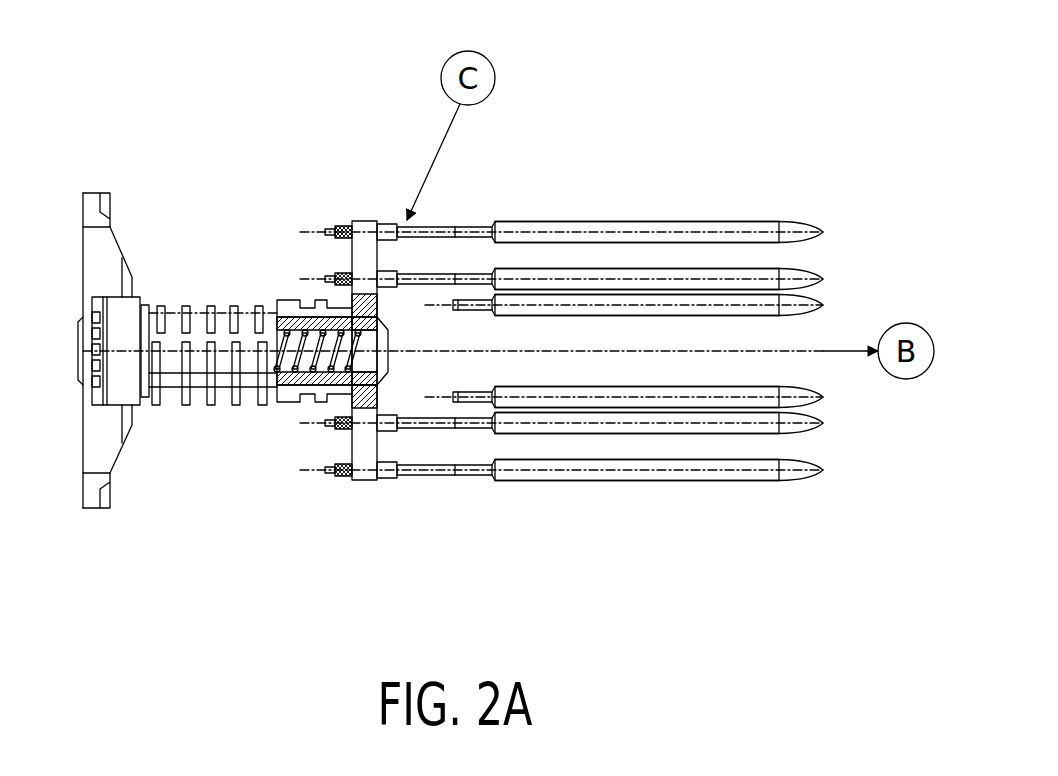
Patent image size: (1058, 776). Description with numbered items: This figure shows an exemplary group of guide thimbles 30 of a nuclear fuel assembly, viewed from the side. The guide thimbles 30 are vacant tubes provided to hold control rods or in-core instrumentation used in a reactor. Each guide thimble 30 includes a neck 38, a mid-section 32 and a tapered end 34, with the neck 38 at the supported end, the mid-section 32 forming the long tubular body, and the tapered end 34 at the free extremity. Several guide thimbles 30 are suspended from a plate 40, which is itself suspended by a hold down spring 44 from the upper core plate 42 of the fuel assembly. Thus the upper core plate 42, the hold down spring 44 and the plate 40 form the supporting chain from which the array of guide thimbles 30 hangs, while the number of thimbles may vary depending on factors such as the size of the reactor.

The guide thimble tube 30 is at (562, 222).
The mid-section 32 is at (636, 222).
The tapered end 34 is at (822, 230).
The neck 38 is at (430, 222).
The plate 40 is at (362, 480).
The upper core plate 42 is at (82, 250).
The hold down spring 44 is at (185, 407).